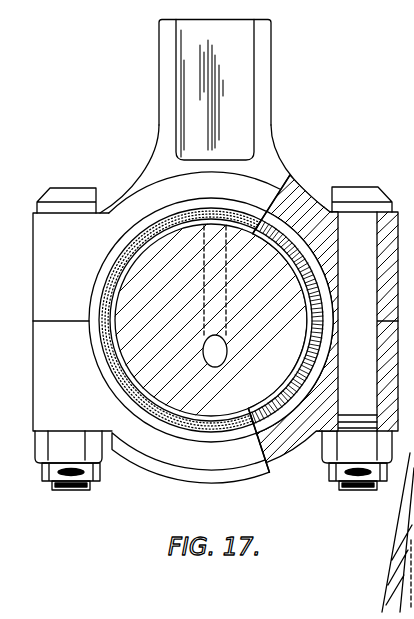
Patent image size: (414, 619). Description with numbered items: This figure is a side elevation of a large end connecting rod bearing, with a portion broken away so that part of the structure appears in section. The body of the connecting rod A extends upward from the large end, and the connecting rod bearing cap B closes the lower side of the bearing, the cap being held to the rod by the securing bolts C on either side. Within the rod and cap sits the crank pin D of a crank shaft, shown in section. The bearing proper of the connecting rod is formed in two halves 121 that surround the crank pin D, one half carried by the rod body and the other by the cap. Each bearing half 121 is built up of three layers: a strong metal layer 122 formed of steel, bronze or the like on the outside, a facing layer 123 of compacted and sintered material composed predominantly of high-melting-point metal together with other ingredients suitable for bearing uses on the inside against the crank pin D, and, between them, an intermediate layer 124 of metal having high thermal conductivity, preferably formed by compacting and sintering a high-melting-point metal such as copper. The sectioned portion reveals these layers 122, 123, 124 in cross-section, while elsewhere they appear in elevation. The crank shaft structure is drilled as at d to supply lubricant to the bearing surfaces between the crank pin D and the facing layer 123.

The bearing half 121 is at (97, 378).
The strong metal layer 122 is at (105, 258).
The facing layer 123 is at (112, 304).
The intermediate layer 124 is at (110, 283).
The body of the connecting rod A is at (269, 100).
The connecting rod bearing cap B is at (165, 474).
The securing bolts C is at (62, 192).
The crank pin D is at (211, 320).
The lubricant drilling d is at (203, 351).